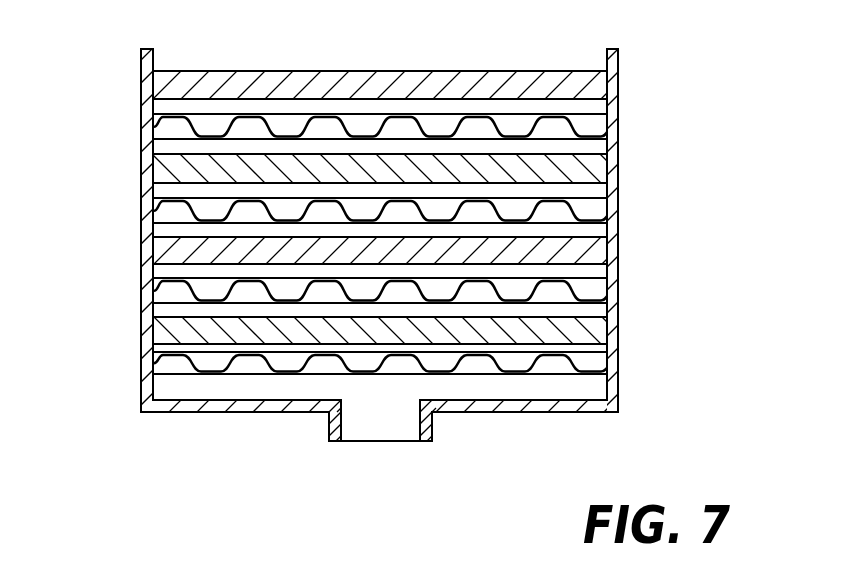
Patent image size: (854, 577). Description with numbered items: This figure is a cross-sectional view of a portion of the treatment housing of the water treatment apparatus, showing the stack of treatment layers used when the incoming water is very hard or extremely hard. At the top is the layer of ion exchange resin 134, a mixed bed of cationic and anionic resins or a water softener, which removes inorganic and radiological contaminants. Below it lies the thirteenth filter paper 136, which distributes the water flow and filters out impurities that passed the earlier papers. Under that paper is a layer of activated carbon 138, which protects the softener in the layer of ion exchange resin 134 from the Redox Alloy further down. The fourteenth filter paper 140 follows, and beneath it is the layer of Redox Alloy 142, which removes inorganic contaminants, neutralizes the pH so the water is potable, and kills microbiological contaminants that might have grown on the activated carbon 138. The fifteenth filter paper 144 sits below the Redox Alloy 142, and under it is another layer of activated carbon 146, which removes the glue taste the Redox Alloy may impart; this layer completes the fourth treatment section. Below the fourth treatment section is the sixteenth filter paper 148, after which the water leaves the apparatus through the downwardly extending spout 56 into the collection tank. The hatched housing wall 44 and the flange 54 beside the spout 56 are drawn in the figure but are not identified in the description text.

The housing 44 is at (492, 406).
The flange 54 is at (329, 430).
The downwardly extending spout 56 is at (341, 419).
The ion exchange resin layer 134 is at (155, 92).
The thirteenth filter paper 136 is at (592, 126).
The activated carbon layer 138 is at (155, 175).
The fourteenth filter paper 140 is at (592, 214).
The Redox Alloy layer 142 is at (155, 257).
The fifteenth filter paper 144 is at (592, 288).
The activated carbon layer 146 is at (155, 329).
The sixteenth filter paper 148 is at (592, 360).